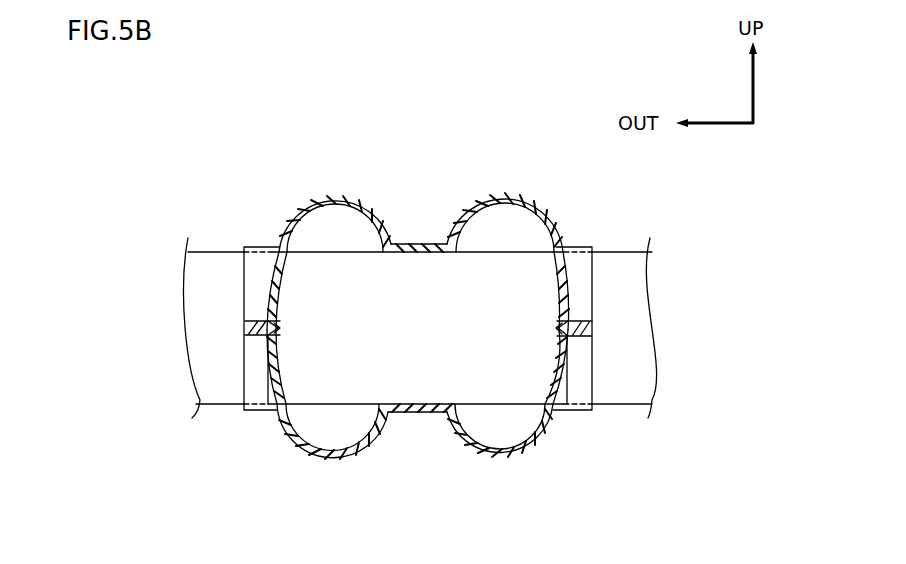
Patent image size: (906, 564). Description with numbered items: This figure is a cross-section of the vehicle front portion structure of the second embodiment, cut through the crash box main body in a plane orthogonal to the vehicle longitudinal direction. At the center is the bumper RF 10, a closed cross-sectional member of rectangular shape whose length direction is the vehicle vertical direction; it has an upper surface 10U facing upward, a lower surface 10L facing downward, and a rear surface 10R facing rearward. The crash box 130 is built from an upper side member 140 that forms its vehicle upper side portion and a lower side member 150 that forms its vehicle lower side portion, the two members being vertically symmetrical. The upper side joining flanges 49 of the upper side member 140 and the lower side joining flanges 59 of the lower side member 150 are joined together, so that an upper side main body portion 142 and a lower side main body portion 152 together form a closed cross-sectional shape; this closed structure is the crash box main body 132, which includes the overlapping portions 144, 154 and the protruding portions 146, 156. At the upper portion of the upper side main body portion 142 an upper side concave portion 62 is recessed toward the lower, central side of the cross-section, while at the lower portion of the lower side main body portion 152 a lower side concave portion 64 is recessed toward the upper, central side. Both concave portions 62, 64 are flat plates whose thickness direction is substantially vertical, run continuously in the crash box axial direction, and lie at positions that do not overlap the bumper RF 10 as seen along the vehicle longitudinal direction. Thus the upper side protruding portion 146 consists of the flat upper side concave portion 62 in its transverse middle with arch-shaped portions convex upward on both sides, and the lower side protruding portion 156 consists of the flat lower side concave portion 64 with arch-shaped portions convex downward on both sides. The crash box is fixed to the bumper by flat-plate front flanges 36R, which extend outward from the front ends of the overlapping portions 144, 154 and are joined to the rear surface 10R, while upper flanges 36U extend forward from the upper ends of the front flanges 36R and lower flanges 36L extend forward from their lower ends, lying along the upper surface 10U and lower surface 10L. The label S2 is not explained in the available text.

The bumper RF 10 is at (417, 327).
The upper surface 10U is at (215, 251).
The lower surface 10L is at (212, 407).
The rear surface 10R is at (443, 332).
The upper flange 36U is at (265, 247).
The lower flange 36L is at (260, 411).
The front flange 36R is at (253, 290).
The upper side joining flange 49 is at (248, 322).
The lower side joining flange 59 is at (250, 333).
The upper side concave portion 62 is at (415, 243).
The lower side concave portion 64 is at (417, 413).
The crash box 130 is at (255, 120).
The crash box main body 132 is at (418, 314).
The upper side member 140 is at (301, 157).
The upper side main body portion 142 is at (504, 183).
The overlapping portion 144 is at (317, 288).
The upper side protruding portion 146 is at (360, 200).
The lower side member 150 is at (318, 470).
The lower side main body portion 152 is at (511, 471).
The overlapping portion 154 is at (318, 378).
The lower side protruding portion 156 is at (372, 462).
The space S2 is at (557, 114).